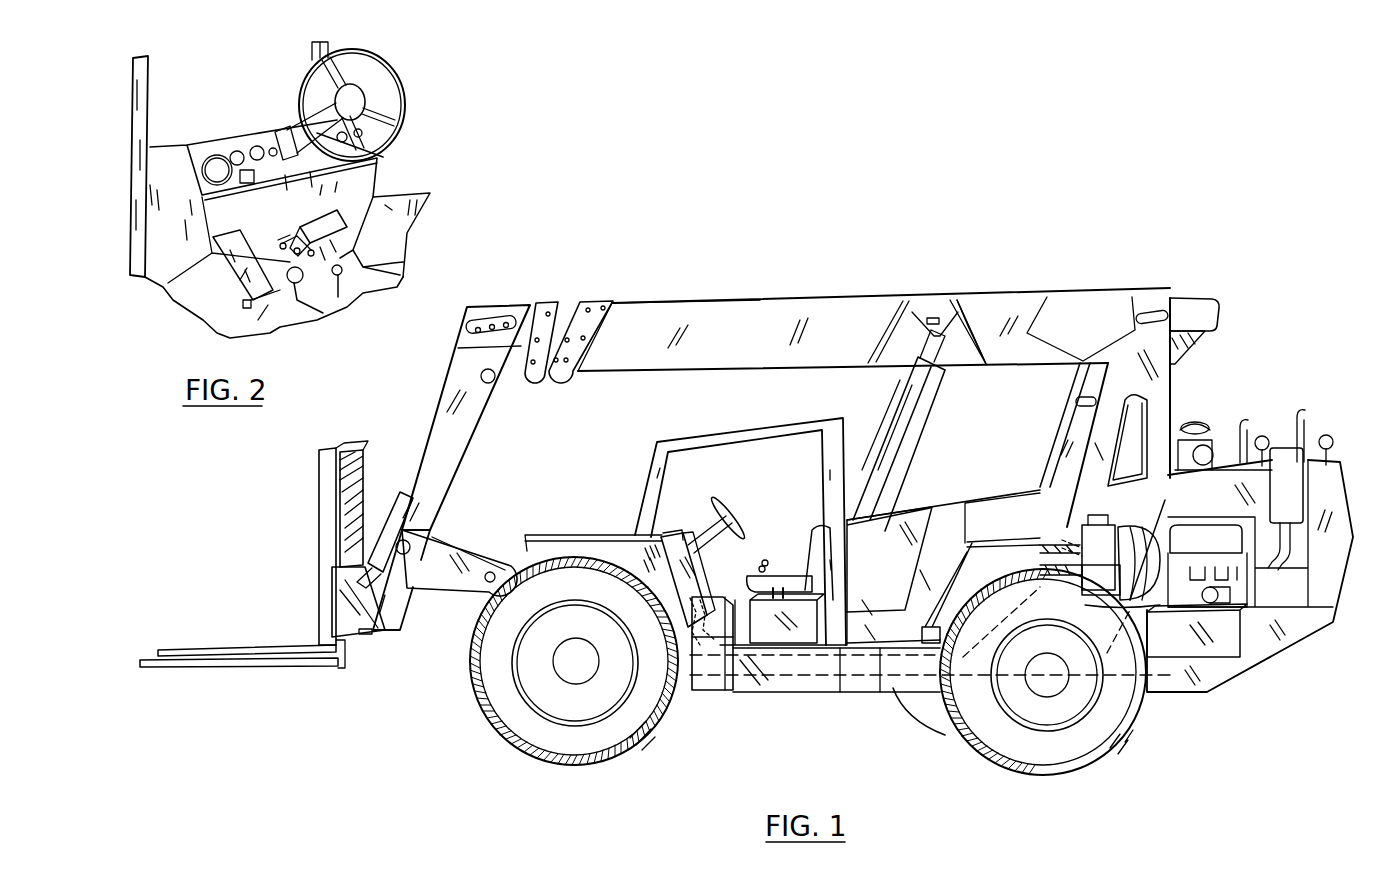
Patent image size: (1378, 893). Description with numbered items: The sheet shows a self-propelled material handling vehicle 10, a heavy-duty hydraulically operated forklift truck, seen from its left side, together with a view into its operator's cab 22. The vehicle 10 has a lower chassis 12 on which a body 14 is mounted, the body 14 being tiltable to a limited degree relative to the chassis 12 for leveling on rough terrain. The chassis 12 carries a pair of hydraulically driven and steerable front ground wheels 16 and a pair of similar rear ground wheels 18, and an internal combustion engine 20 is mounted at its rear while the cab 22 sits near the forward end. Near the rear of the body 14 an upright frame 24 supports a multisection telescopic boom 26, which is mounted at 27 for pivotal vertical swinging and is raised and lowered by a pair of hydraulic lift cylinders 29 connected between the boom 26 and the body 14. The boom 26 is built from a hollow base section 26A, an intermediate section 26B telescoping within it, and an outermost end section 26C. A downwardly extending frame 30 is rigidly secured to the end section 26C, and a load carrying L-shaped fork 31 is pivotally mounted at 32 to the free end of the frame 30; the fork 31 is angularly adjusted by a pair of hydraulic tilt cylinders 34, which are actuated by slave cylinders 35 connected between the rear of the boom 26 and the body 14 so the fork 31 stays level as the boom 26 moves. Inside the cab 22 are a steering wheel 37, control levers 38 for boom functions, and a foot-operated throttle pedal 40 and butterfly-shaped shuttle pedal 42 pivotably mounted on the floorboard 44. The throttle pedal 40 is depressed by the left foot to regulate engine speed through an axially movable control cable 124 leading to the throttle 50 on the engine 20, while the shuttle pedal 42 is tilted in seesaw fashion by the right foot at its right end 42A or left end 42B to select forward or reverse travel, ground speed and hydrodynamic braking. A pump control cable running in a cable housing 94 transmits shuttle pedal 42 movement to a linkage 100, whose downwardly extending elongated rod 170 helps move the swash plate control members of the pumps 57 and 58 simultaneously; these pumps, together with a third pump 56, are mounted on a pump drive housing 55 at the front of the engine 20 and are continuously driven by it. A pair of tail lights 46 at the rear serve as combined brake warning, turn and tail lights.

In FIG. 1, the self-propelled material handling vehicle 10 is at (867, 268).
In FIG. 1, the chassis 12 is at (708, 690).
In FIG. 1, the body 14 is at (910, 517).
In FIG. 1, the front ground wheels 16 is at (594, 766).
In FIG. 1, the rear ground wheels 18 is at (967, 750).
In FIG. 1, the internal combustion engine 20 is at (1242, 575).
In FIG. 1, the operator's cab 22 is at (760, 436).
In FIG. 2, the operator's cab 22 is at (393, 193).
In FIG. 1, the upright frame 24 is at (1166, 408).
In FIG. 1, the multisection telescopic boom 26 is at (762, 302).
In FIG. 1, the base section 26A is at (690, 302).
In FIG. 1, the intermediate section 26B is at (574, 303).
In FIG. 1, the end section 26C is at (546, 300).
In FIG. 1, the boom mounting pivot 27 is at (1152, 318).
In FIG. 1, the hydraulic lift cylinders 29 is at (900, 403).
In FIG. 1, the frame 30 is at (449, 371).
In FIG. 1, the load carrying L-shaped fork 31 is at (266, 650).
In FIG. 1, the fork pivot mounting 32 is at (365, 637).
In FIG. 1, the hydraulic tilt cylinders 34 is at (392, 506).
In FIG. 1, the slave cylinders 35 is at (1072, 472).
In FIG. 1, the steering wheel 37 is at (736, 512).
In FIG. 2, the steering wheel 37 is at (385, 103).
In FIG. 1, the control levers 38 is at (766, 566).
In FIG. 1, the throttle pedal 40 is at (670, 634).
In FIG. 2, the throttle pedal 40 is at (233, 241).
In FIG. 1, the shuttle pedal 42 is at (702, 596).
In FIG. 2, the shuttle pedal 42 is at (322, 212).
In FIG. 2, the right end of shuttle pedal 42A is at (332, 236).
In FIG. 2, the left end of shuttle pedal 42B is at (285, 233).
In FIG. 2, the floorboard 44 is at (310, 280).
In FIG. 1, the tail lights 46 is at (1262, 436).
In FIG. 1, the throttle 50 is at (1207, 535).
In FIG. 1, the pump drive housing 55 is at (1130, 530).
In FIG. 1, the hydraulic pump 56 is at (1012, 546).
In FIG. 1, the hydraulic pump 57 is at (1080, 540).
In FIG. 1, the hydraulic pump 58 is at (1082, 580).
In FIG. 1, the cable housing 94 is at (892, 657).
In FIG. 1, the linkage 100 is at (1097, 528).
In FIG. 1, the control cable 124 is at (850, 694).
In FIG. 1, the elongated rod 170 is at (1140, 530).